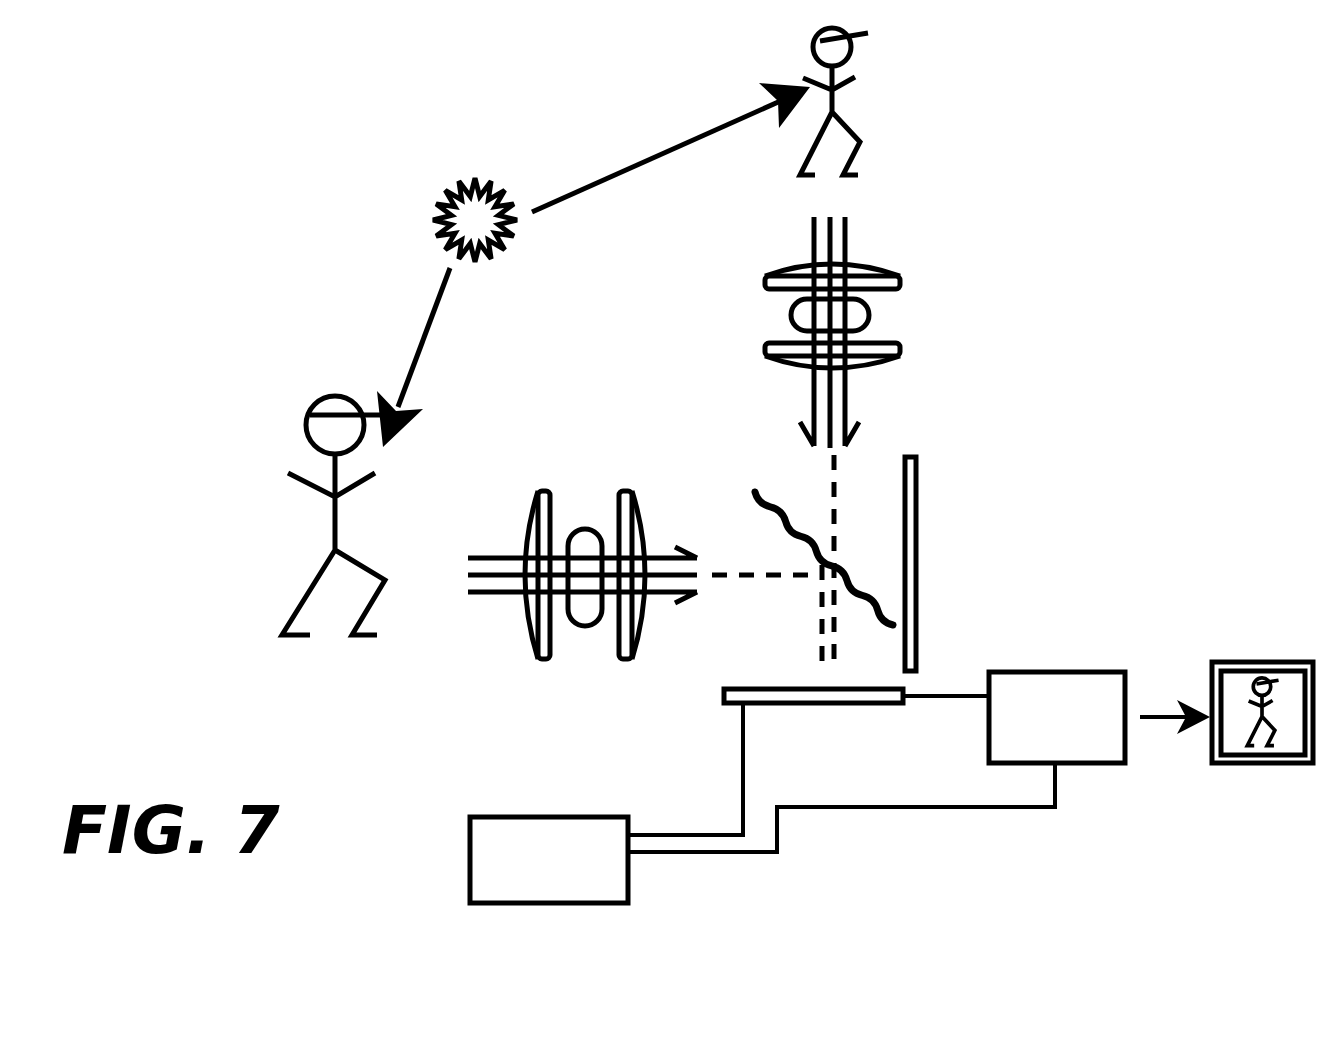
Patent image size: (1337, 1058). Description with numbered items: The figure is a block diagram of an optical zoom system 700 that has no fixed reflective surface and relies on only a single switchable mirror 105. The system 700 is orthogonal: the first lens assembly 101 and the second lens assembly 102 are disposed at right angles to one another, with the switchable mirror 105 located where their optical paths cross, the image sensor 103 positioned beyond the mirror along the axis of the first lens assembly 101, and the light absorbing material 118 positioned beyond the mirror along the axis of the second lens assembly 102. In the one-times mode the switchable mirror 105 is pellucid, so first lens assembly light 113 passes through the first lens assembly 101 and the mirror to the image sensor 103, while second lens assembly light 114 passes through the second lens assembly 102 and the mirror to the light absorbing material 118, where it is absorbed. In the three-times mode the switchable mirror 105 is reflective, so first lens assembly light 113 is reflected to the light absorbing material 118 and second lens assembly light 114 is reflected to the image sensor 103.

The optical zoom system 700 is at (1027, 313).
The first lens assembly 101 is at (900, 276).
The second lens assembly 102 is at (550, 490).
The image sensor 103 is at (842, 705).
The switchable mirror 105 is at (755, 492).
The first lens assembly light 113 is at (810, 242).
The second lens assembly light 114 is at (497, 592).
The light absorbing material 118 is at (918, 482).